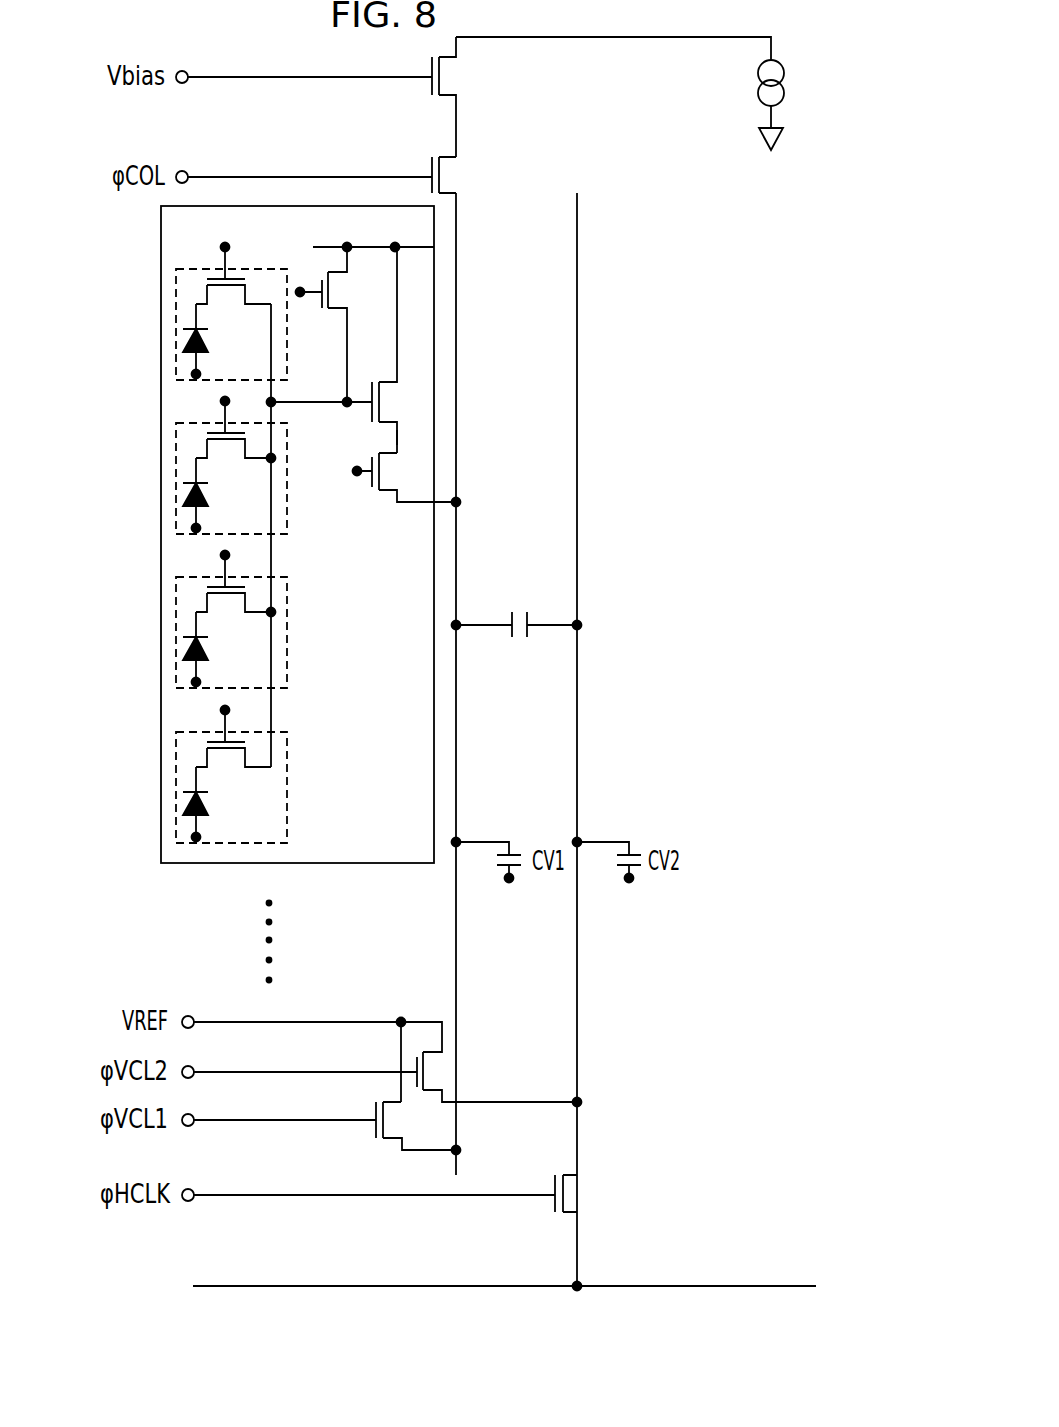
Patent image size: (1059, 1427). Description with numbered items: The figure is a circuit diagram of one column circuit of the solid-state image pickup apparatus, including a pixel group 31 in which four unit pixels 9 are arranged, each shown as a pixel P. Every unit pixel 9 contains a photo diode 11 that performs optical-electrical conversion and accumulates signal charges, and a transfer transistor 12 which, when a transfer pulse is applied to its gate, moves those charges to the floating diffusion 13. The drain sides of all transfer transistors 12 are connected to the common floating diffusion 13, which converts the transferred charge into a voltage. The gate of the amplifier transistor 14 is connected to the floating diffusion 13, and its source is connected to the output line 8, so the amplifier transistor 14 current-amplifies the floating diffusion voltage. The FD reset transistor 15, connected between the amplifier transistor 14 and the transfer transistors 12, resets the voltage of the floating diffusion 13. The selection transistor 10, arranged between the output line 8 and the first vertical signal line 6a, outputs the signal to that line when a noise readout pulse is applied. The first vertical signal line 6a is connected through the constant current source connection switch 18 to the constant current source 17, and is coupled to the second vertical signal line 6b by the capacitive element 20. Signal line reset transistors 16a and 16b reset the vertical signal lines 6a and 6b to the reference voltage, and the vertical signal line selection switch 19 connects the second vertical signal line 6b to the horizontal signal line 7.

The first vertical signal line 6a is at (458, 391).
The second vertical signal line 6b is at (579, 437).
The horizontal signal line 7 is at (492, 1284).
The output line 8 is at (399, 437).
The unit pixel 9 is at (176, 786).
The selection transistor 10 is at (382, 493).
The photo diode 11 is at (209, 346).
The transfer transistor 12 is at (232, 276).
The floating diffusion 13 is at (273, 405).
The amplifier transistor 14 is at (388, 380).
The FD reset transistor 15 is at (335, 268).
The signal line reset transistor 16a is at (380, 1140).
The signal line reset transistor 16b is at (442, 1052).
The constant current source 17 is at (785, 93).
The constant current source connection switch 18 is at (432, 155).
The vertical signal line selection switch 19 is at (581, 1176).
The capacitive element 20 is at (529, 611).
The pixel group 31 is at (161, 378).
The pixel P is at (150, 761).